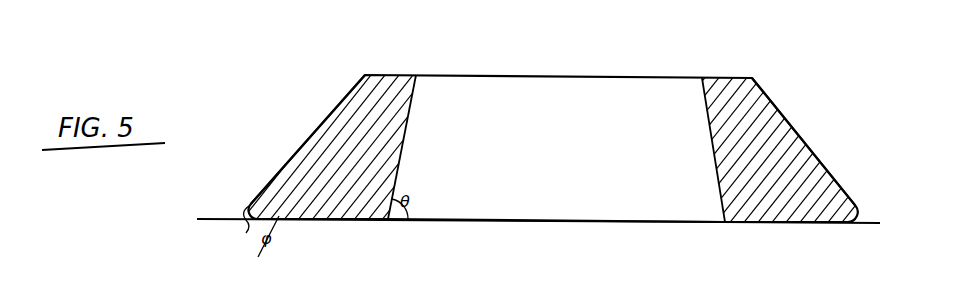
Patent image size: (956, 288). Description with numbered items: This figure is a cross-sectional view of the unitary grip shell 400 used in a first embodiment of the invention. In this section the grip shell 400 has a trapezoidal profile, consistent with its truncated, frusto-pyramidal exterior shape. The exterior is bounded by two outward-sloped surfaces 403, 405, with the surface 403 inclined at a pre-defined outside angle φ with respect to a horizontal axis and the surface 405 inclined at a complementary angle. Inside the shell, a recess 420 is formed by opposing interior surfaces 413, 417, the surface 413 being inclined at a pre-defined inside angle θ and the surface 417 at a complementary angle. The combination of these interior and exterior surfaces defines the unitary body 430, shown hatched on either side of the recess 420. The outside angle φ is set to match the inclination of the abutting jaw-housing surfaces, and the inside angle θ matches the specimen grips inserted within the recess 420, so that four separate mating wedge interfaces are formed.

The grip shell 400 is at (690, 47).
The outward-sloped surface 403 is at (303, 138).
The outward-sloped surface 405 is at (788, 116).
The interior surface 413 is at (403, 161).
The interior surface 417 is at (715, 167).
The recess 420 is at (552, 152).
The unitary body 430 is at (362, 100).